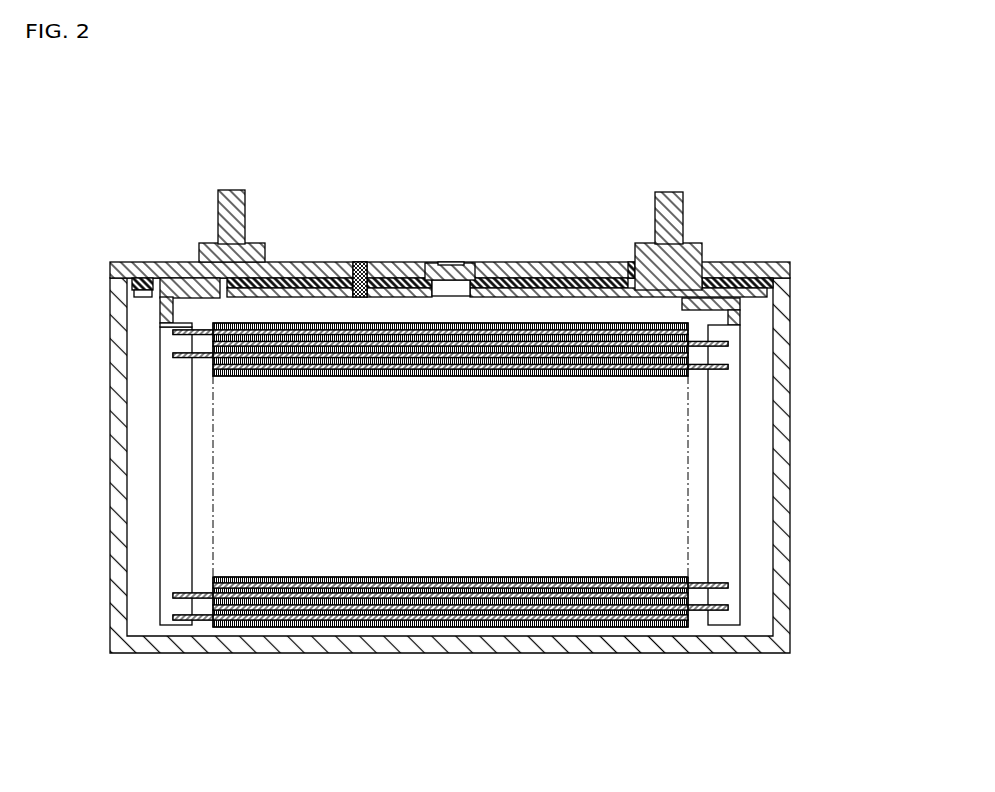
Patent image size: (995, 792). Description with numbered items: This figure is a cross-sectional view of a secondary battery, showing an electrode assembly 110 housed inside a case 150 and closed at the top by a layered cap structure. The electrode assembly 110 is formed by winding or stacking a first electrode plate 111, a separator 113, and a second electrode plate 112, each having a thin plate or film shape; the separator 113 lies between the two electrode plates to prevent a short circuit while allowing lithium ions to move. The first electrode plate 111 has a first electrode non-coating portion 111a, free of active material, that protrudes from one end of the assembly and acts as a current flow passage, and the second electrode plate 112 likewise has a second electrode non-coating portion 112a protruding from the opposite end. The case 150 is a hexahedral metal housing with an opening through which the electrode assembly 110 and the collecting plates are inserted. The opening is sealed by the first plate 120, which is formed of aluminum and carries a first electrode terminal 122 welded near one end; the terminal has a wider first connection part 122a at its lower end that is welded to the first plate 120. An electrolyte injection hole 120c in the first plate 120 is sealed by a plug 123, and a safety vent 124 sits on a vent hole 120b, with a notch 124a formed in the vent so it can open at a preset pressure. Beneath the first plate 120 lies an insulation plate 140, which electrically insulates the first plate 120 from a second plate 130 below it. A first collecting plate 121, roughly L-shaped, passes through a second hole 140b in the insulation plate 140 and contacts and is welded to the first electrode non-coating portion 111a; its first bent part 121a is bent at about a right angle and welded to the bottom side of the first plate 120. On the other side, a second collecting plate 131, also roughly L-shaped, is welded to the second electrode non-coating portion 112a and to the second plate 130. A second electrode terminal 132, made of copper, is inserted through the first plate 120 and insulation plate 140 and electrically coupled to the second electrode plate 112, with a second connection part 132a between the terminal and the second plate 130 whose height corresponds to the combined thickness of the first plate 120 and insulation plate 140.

The electrode assembly 110 is at (450, 516).
The first electrode plate 111 is at (430, 520).
The first electrode non-coating portion 111a is at (202, 625).
The second electrode plate 112 is at (470, 526).
The second electrode non-coating portion 112a is at (697, 626).
The separator 113 is at (467, 628).
The first plate 120 is at (284, 262).
The vent hole 120b is at (460, 296).
The electrolyte injection hole 120c is at (384, 271).
The first collecting plate 121 is at (132, 451).
The first bent part 121a is at (157, 304).
The first electrode terminal 122 is at (249, 202).
The first connection part 122a is at (253, 243).
The plug 123 is at (365, 265).
The safety vent 124 is at (464, 249).
The notch 124a is at (446, 263).
The second plate 130 is at (243, 298).
The second collecting plate 131 is at (759, 382).
The second electrode terminal 132 is at (684, 216).
The second connection part 132a is at (690, 243).
The insulation plate 140 is at (500, 249).
The second hole 140b is at (632, 262).
The case 150 is at (790, 485).